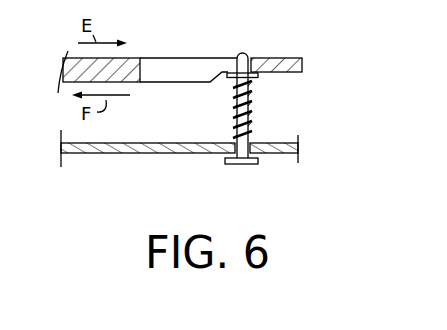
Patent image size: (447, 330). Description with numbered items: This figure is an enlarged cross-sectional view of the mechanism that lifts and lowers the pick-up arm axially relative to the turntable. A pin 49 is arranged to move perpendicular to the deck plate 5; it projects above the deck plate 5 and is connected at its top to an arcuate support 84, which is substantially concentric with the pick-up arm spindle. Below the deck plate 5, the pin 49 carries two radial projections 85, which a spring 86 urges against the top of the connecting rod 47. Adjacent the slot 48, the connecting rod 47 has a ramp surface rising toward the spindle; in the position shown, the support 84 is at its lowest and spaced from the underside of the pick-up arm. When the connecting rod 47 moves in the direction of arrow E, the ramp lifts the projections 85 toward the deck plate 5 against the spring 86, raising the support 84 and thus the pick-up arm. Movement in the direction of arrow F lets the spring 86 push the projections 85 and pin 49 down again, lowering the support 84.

The slot 48 is at (168, 71).
The connecting rod 47 is at (283, 60).
The pin 49 is at (249, 122).
The radial projections 85 is at (258, 77).
The spring 86 is at (256, 100).
The deck plate 5 is at (289, 154).
The arcuate support 84 is at (232, 165).